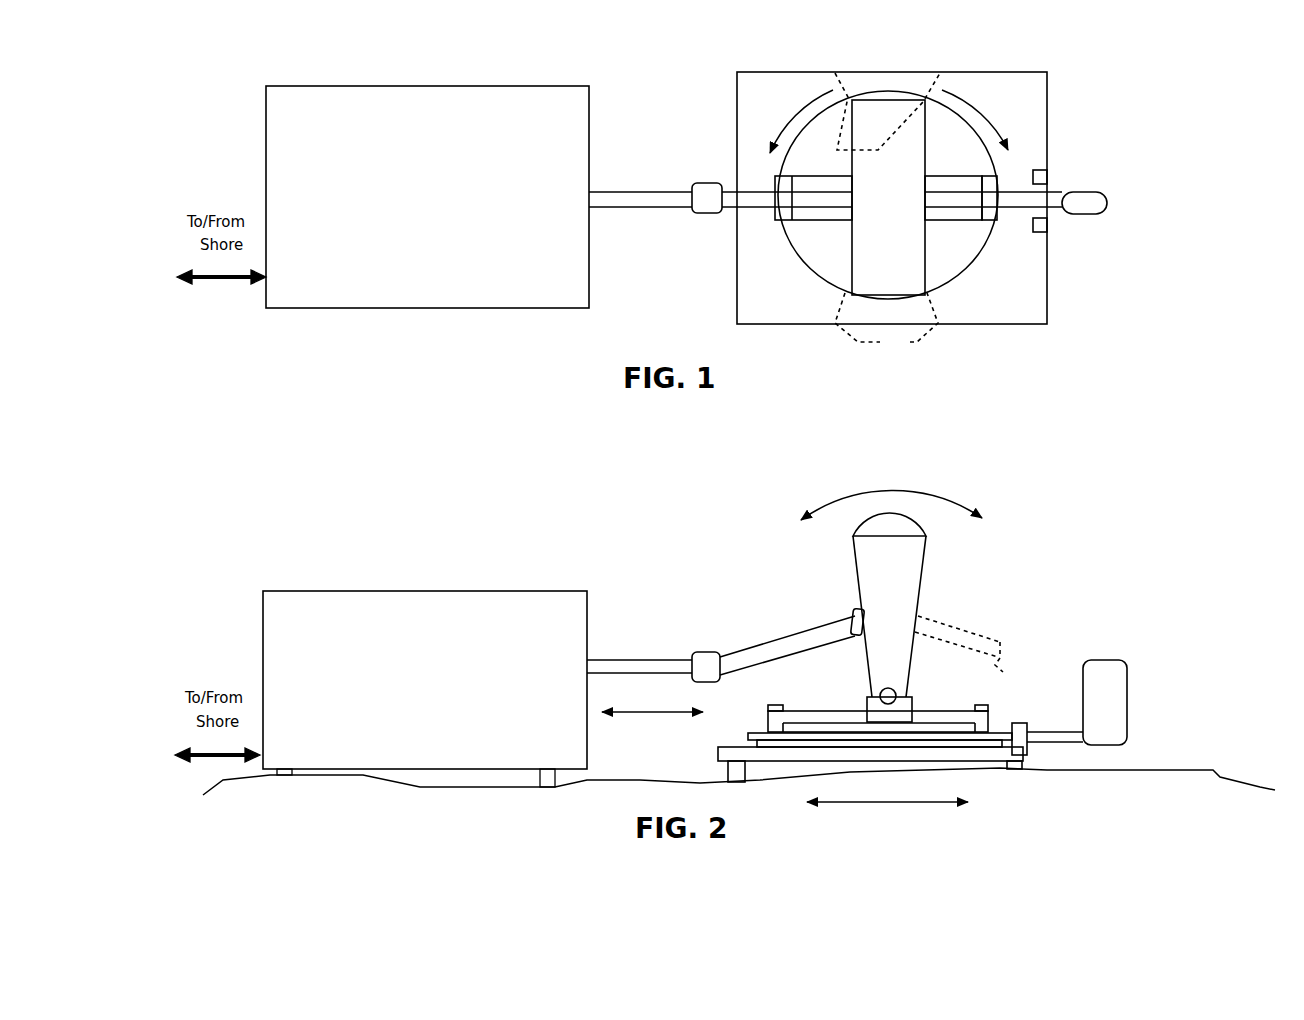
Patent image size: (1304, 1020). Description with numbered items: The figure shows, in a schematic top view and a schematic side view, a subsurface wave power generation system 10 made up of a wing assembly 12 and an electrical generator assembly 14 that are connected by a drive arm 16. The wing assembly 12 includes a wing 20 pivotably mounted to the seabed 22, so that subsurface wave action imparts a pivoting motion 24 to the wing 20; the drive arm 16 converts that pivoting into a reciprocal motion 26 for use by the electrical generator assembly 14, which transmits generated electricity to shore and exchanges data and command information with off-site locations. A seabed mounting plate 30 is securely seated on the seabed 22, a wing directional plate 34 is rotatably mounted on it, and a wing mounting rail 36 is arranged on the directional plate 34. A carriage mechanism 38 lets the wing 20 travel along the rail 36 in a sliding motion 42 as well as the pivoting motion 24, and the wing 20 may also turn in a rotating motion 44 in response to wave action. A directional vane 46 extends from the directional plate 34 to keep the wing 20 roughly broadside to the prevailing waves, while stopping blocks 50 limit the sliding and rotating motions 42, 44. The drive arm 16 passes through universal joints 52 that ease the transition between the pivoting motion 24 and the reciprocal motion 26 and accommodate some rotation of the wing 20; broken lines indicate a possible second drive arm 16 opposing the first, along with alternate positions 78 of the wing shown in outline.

In FIG. 1, the subsurface wave power generation system 10 is at (1184, 34).
In FIG. 2, the subsurface wave power generation system 10 is at (1144, 461).
In FIG. 1, the wing assembly 12 is at (992, 39).
In FIG. 2, the wing assembly 12 is at (1071, 559).
In FIG. 1, the electrical generator assembly 14 is at (427, 174).
In FIG. 2, the electrical generator assembly 14 is at (425, 663).
In FIG. 1, the drive arm 16 is at (825, 175).
In FIG. 2, the drive arm 16 is at (1020, 640).
In FIG. 1, the wing 20 is at (823, 292).
In FIG. 2, the wing 20 is at (919, 605).
In FIG. 1, the seabed 22 is at (657, 293).
In FIG. 2, the seabed 22 is at (739, 765).
In FIG. 2, the pivoting motion 24 is at (910, 490).
In FIG. 2, the reciprocal motion 26 is at (652, 731).
In FIG. 1, the seabed mounting plate 30 is at (892, 172).
In FIG. 2, the seabed mounting plate 30 is at (881, 782).
In FIG. 1, the wing directional plate 34 is at (934, 203).
In FIG. 2, the wing directional plate 34 is at (900, 709).
In FIG. 1, the wing mounting rail 36 is at (878, 213).
In FIG. 2, the wing mounting rail 36 is at (878, 698).
In FIG. 2, the carriage mechanism 38 is at (854, 695).
In FIG. 2, the sliding motion 42 is at (917, 802).
In FIG. 1, the rotating motion 44 is at (889, 99).
In FIG. 1, the directional vane 46 is at (1102, 223).
In FIG. 2, the directional vane 46 is at (1103, 697).
In FIG. 1, the stopping blocks 50 is at (1043, 207).
In FIG. 2, the stopping blocks 50 is at (906, 744).
In FIG. 1, the universal joints 52 is at (684, 215).
In FIG. 2, the universal joints 52 is at (748, 632).
In FIG. 1, the alternate position outline 78 is at (868, 214).